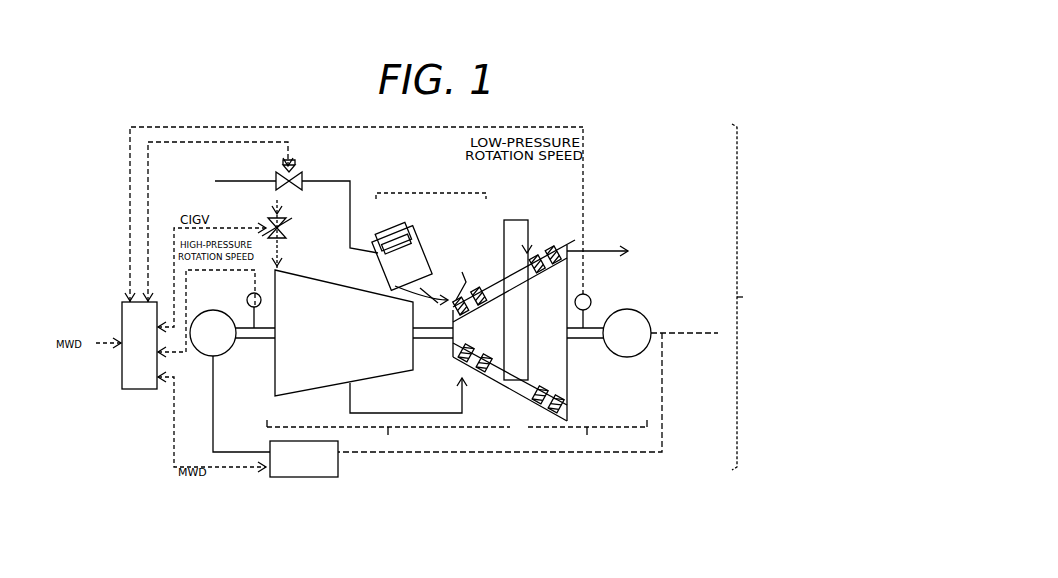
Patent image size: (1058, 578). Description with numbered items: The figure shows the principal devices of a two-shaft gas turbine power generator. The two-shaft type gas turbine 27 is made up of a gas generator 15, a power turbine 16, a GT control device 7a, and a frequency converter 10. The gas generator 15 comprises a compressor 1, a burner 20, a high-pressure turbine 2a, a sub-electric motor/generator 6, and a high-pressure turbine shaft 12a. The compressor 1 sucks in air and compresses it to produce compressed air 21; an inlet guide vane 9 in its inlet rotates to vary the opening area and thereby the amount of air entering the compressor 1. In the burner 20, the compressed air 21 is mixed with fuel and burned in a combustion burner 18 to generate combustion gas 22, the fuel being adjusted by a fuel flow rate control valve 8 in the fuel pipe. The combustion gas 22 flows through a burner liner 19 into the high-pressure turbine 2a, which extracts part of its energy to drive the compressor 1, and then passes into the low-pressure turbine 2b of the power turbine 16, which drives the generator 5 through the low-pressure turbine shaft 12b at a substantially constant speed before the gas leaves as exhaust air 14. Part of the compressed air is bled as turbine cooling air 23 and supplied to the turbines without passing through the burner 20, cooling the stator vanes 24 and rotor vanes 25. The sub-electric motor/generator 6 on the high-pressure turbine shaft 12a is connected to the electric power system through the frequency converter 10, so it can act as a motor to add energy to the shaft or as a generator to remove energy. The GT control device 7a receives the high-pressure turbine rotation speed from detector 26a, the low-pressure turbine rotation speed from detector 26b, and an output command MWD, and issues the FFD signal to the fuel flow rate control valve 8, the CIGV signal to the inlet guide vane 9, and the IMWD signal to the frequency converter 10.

The compressor 1 is at (352, 368).
The high-pressure turbine 2a is at (453, 357).
The low-pressure turbine 2b is at (568, 368).
The generator 5 is at (643, 316).
The sub-electric motor/generator 6 is at (213, 358).
The GT control device 7a is at (148, 389).
The fuel flow rate control valve 8 is at (296, 160).
The inlet guide vane (IGV) 9 is at (284, 228).
The frequency converter 10 is at (338, 462).
The high-pressure turbine shaft 12a is at (258, 340).
The low-pressure turbine shaft 12b is at (593, 328).
The exhaust air 14 is at (586, 248).
The gas generator 15 is at (388, 435).
The power turbine 16 is at (587, 435).
The combustion burner 18 is at (402, 235).
The burner liner 19 is at (460, 300).
The burner 20 is at (408, 193).
The compressed air 21 is at (420, 265).
The combustion gas 22 is at (448, 276).
The turbine cooling air 23 is at (350, 400).
The stator vanes 24 is at (466, 378).
The rotor vanes 25 is at (482, 378).
The high-pressure turbine rotation speed detector 26a is at (248, 296).
The low-pressure turbine rotation speed detector 26b is at (598, 290).
The 2-shaft type gas turbine 27 is at (752, 297).